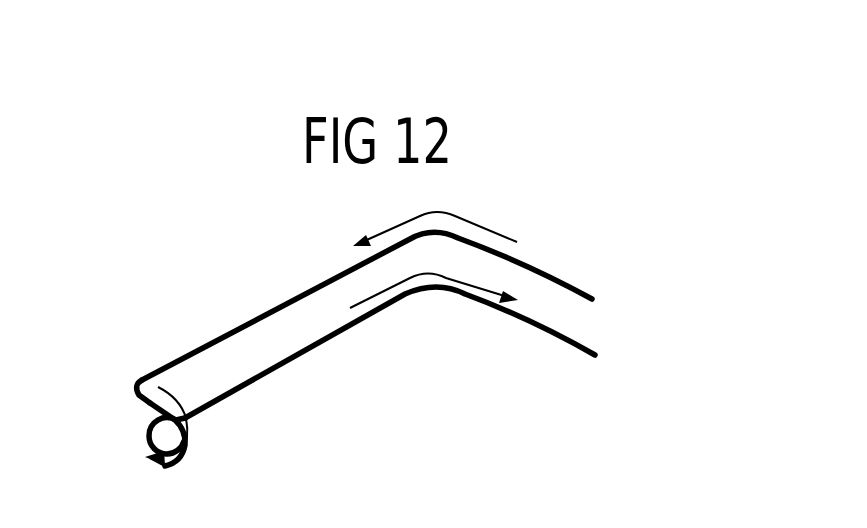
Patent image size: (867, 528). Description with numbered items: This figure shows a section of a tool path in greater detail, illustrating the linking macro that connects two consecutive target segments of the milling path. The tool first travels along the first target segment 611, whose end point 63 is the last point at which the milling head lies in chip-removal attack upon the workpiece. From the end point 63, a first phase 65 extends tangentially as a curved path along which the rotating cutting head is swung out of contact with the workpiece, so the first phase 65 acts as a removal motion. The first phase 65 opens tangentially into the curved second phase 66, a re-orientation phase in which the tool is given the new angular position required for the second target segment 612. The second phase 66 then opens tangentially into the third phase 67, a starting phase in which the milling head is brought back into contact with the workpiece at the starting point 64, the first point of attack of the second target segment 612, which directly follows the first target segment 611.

The first target segment 611 is at (553, 279).
The second target segment 612 is at (318, 345).
The end point 63 is at (147, 377).
The starting point 64 is at (148, 433).
The first phase 65 is at (136, 392).
The second phase 66 is at (190, 442).
The third phase 67 is at (142, 456).